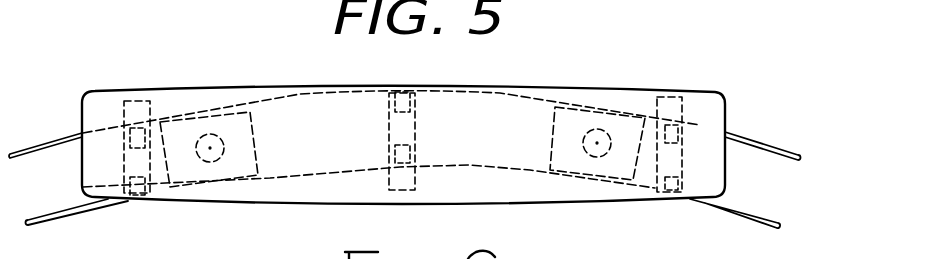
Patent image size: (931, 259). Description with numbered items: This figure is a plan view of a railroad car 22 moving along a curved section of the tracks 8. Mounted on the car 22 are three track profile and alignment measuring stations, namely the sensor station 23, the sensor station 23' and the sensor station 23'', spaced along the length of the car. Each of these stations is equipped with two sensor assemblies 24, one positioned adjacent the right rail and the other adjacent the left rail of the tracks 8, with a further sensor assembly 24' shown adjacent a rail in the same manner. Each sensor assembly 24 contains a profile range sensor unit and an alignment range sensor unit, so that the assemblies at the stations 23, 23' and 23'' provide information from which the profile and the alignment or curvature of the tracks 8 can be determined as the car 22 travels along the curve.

The railroad car 22 is at (300, 206).
The sensor station 23 is at (131, 118).
The sensor station 23' is at (415, 118).
The sensor station 23'' is at (676, 119).
The sensor assembly 24 is at (398, 128).
The sensor assembly 24' is at (628, 219).
The track 8 is at (776, 147).